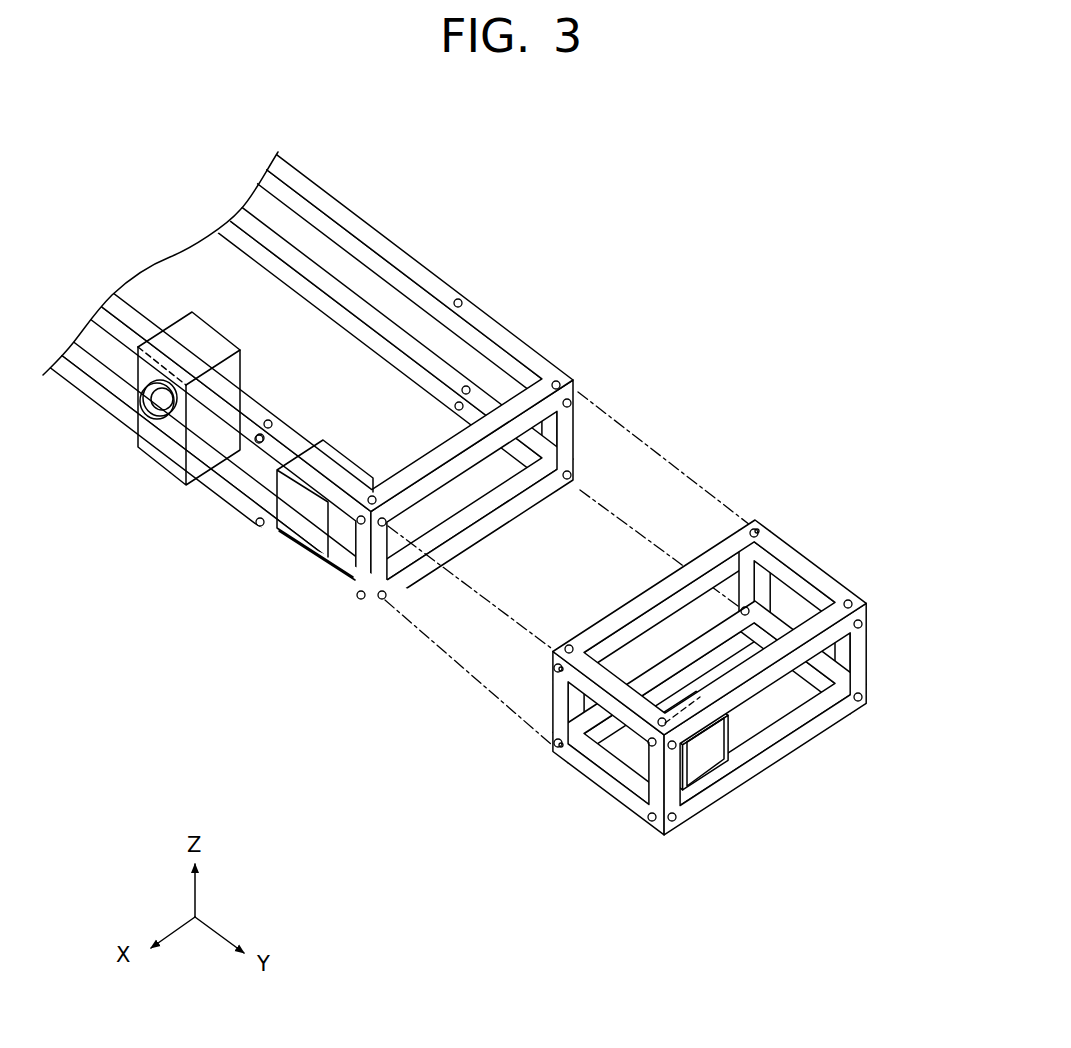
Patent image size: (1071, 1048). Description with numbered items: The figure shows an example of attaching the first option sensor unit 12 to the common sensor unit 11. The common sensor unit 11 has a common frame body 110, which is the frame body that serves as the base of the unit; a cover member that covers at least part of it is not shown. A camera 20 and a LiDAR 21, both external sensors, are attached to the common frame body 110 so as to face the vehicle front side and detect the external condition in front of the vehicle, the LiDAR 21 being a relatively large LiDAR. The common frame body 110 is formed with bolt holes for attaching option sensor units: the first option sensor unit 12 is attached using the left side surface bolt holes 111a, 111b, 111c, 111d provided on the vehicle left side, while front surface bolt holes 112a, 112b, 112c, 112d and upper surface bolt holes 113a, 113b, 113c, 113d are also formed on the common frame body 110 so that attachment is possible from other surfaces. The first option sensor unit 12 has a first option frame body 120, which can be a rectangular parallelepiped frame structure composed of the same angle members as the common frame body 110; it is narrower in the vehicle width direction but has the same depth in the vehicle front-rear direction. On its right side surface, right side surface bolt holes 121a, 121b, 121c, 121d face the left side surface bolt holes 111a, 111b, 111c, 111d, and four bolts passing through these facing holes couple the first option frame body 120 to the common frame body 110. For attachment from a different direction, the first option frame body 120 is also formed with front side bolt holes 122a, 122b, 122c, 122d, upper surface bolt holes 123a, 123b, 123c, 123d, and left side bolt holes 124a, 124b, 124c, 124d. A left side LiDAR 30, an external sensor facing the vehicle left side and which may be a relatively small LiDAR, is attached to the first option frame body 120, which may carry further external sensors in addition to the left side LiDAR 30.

The common sensor unit 11 is at (286, 345).
The common frame body 110 is at (417, 268).
The left side surface bolt hole 111a is at (382, 518).
The left side surface bolt hole 111b is at (382, 599).
The left side surface bolt hole 111c is at (571, 403).
The left side surface bolt hole 111d is at (567, 480).
The front surface bolt hole 112a is at (358, 524).
The front surface bolt hole 112b is at (360, 599).
The front surface bolt hole 112c is at (257, 442).
The front surface bolt hole 112d is at (256, 525).
The upper surface bolt hole 113a is at (371, 496).
The upper surface bolt hole 113b is at (268, 420).
The upper surface bolt hole 113c is at (556, 381).
The upper surface bolt hole 113d is at (462, 303).
The camera 20 is at (172, 428).
The LiDAR 21 is at (297, 503).
The first option sensor unit 12 is at (736, 652).
The first option frame body 120 is at (736, 677).
The right side surface bolt hole 121a is at (558, 664).
The right side surface bolt hole 121b is at (552, 744).
The right side surface bolt hole 121c is at (751, 529).
The right side surface bolt hole 121d is at (742, 607).
The front side bolt hole 122a is at (651, 747).
The front side bolt hole 122b is at (650, 822).
The front side bolt hole 122c is at (546, 673).
The front side bolt hole 122d is at (556, 749).
The upper surface bolt hole 123a is at (570, 645).
The upper surface bolt hole 123b is at (662, 718).
The upper surface bolt hole 123c is at (759, 528).
The upper surface bolt hole 123d is at (853, 604).
The left side bolt hole 124a is at (673, 750).
The left side bolt hole 124b is at (673, 822).
The left side bolt hole 124c is at (863, 624).
The left side bolt hole 124d is at (863, 697).
The left side LiDAR 30 is at (713, 760).